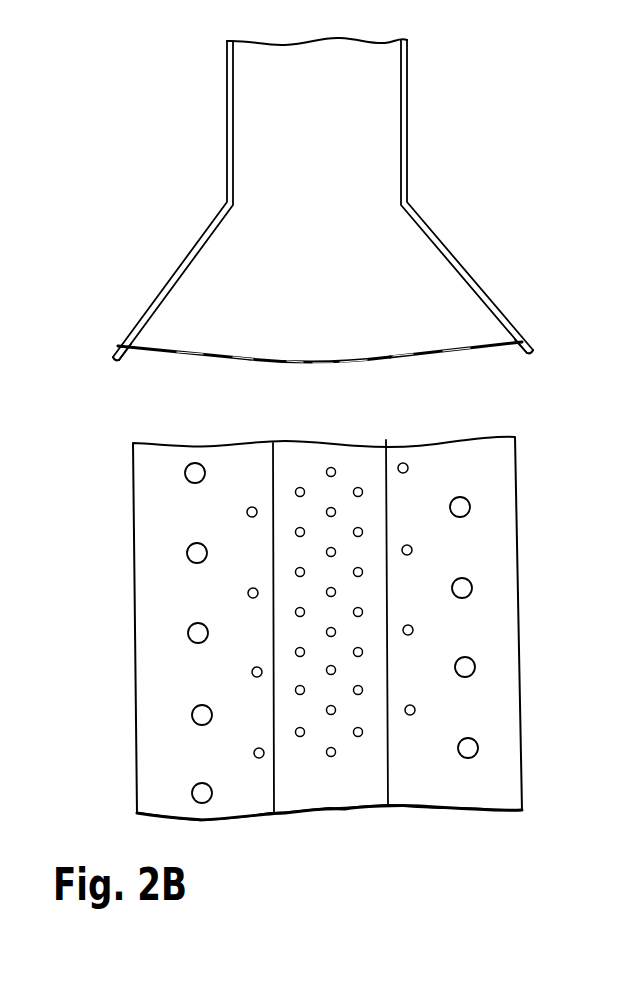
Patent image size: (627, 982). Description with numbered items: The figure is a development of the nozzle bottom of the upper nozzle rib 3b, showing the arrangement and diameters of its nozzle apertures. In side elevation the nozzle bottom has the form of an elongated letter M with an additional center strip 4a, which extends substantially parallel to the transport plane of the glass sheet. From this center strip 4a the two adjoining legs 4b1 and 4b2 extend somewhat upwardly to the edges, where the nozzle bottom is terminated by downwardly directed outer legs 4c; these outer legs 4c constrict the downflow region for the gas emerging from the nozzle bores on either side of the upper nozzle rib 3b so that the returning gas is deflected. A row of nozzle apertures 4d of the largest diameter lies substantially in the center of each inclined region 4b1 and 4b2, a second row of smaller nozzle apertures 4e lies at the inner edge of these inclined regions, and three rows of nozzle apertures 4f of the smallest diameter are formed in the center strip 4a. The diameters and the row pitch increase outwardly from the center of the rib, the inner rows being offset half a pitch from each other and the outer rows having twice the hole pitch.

The upper nozzle rib 3b is at (430, 250).
The center strip 4a is at (332, 363).
The leg 4b1 is at (163, 350).
The leg 4b2 is at (436, 352).
The outer legs 4c is at (124, 347).
The nozzle apertures 4d is at (193, 643).
The nozzle apertures 4e is at (247, 592).
The nozzle apertures 4f is at (333, 758).